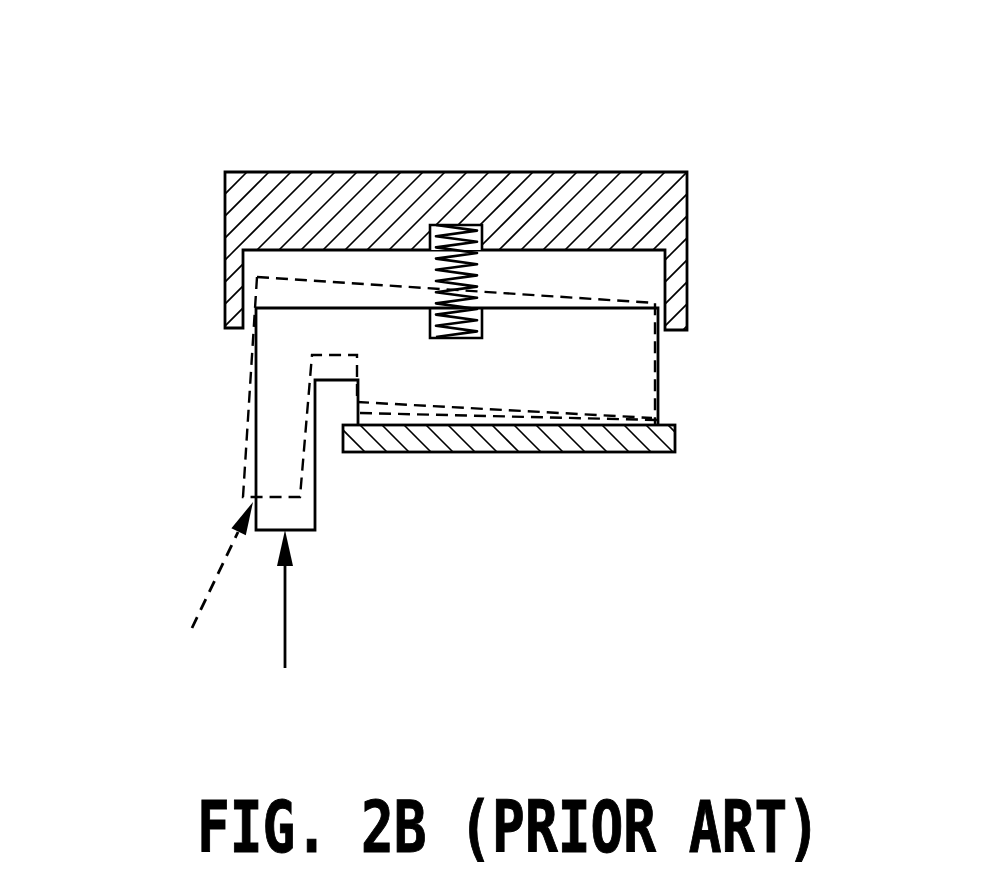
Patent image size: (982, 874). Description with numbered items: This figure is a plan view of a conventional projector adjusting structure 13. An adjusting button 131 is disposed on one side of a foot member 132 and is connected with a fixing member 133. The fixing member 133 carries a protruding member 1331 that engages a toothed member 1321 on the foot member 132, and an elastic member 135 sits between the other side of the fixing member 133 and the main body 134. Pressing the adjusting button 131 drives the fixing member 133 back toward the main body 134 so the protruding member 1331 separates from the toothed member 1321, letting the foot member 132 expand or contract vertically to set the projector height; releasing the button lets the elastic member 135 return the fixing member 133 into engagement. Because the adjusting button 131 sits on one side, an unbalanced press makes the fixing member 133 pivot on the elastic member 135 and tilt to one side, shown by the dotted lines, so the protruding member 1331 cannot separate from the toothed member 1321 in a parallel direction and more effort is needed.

The projector adjusting structure 13 is at (228, 88).
The adjusting button 131 is at (305, 513).
The foot member 132 is at (675, 440).
The toothed member 1321 is at (657, 421).
The fixing member 133 is at (270, 410).
The protruding member 1331 is at (603, 421).
The main body 134 is at (665, 207).
The elastic member 135 is at (477, 268).